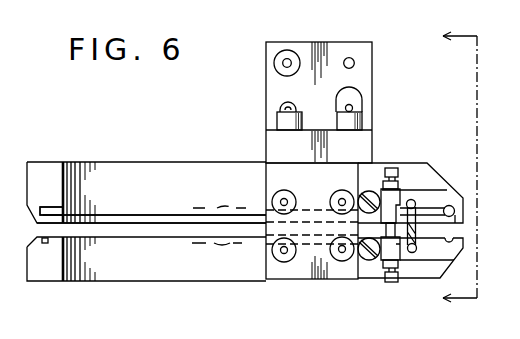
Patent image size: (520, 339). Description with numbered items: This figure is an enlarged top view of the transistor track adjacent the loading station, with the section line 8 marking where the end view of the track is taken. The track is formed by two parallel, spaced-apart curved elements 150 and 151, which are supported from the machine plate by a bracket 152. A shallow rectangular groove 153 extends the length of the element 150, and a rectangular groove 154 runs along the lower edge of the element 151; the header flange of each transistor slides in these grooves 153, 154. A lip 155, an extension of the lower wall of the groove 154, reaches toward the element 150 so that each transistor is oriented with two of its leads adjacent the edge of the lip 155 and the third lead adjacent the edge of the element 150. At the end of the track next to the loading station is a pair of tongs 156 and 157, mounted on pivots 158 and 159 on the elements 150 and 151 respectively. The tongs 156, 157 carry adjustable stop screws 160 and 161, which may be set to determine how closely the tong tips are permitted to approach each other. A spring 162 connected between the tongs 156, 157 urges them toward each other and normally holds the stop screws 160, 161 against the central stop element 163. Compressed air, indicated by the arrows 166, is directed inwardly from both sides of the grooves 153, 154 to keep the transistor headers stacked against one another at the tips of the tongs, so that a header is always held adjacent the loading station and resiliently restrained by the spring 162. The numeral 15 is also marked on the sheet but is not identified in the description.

The section line 8— 8 is at (448, 168).
The frame member 15 is at (511, 133).
The curved element 150 is at (177, 278).
The curved element 151 is at (122, 165).
The bracket 152 is at (270, 142).
The shallow rectangular groove 153 is at (46, 243).
The rectangular groove 154 is at (44, 207).
The lip 155 is at (130, 217).
The tong 156 is at (438, 255).
The tong 157 is at (440, 203).
The pivot 158 is at (373, 259).
The pivot 159 is at (361, 194).
The adjustable stop screw 160 is at (392, 283).
The adjustable stop screw 161 is at (390, 166).
The spring 162 is at (414, 203).
The central stop element 163 is at (391, 231).
The arrows 166 is at (187, 177).